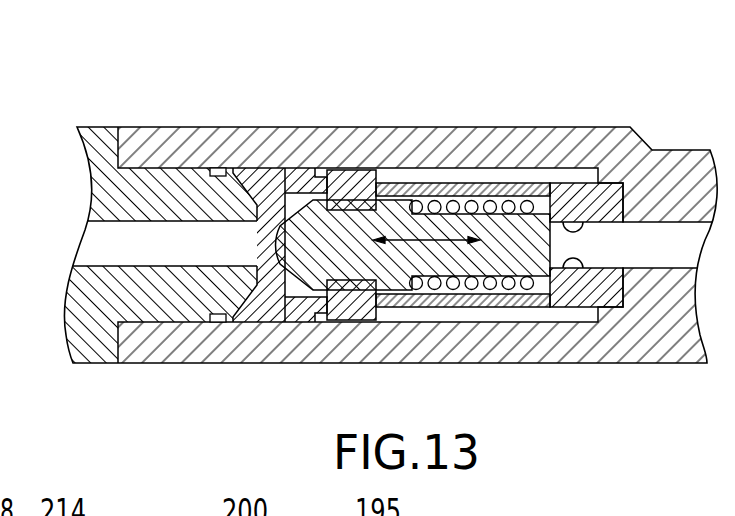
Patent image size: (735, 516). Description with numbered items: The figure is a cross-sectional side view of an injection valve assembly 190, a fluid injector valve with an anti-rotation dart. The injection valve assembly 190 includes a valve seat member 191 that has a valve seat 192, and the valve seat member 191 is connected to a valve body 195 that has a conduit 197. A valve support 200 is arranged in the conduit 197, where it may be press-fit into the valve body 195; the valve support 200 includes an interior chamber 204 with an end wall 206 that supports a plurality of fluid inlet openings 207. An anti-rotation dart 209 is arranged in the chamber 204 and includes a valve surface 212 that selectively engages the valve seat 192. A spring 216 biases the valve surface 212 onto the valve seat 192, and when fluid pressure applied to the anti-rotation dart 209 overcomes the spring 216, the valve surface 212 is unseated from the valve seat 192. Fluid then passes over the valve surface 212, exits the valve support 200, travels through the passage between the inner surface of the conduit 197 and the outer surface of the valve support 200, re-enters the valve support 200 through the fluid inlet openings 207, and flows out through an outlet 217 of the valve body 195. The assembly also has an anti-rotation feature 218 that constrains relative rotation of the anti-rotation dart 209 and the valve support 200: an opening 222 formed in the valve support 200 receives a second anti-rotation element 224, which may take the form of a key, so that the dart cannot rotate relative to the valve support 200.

The injection valve assembly 190 is at (72, 97).
The valve seat member 191 is at (99, 300).
The valve seat 192 is at (257, 226).
The valve body 195 is at (540, 378).
The conduit 197 is at (568, 183).
The valve support 200 is at (513, 190).
The chamber 204 is at (482, 293).
The end wall 206 is at (547, 293).
The fluid inlet openings 207 is at (580, 218).
The anti-rotation dart 209 is at (436, 173).
The valve surface 212 is at (280, 256).
The spring 216 is at (443, 287).
The outlet 217 is at (687, 257).
The anti-rotation feature 218 is at (311, 146).
The opening 222 is at (376, 188).
The second anti-rotation element 224 is at (345, 303).